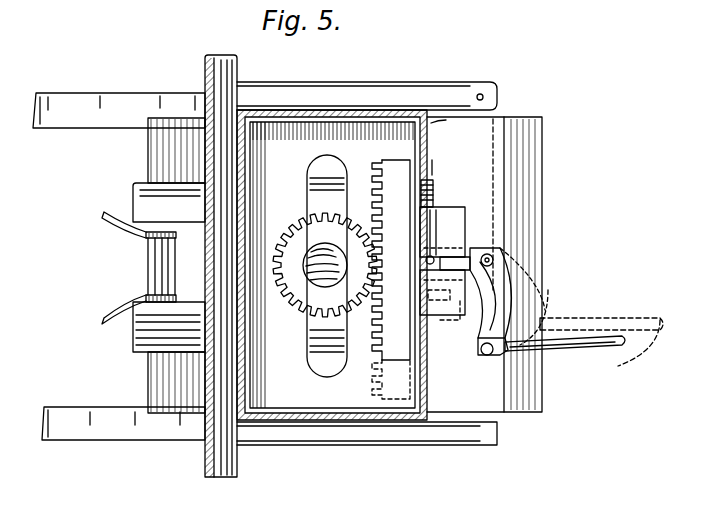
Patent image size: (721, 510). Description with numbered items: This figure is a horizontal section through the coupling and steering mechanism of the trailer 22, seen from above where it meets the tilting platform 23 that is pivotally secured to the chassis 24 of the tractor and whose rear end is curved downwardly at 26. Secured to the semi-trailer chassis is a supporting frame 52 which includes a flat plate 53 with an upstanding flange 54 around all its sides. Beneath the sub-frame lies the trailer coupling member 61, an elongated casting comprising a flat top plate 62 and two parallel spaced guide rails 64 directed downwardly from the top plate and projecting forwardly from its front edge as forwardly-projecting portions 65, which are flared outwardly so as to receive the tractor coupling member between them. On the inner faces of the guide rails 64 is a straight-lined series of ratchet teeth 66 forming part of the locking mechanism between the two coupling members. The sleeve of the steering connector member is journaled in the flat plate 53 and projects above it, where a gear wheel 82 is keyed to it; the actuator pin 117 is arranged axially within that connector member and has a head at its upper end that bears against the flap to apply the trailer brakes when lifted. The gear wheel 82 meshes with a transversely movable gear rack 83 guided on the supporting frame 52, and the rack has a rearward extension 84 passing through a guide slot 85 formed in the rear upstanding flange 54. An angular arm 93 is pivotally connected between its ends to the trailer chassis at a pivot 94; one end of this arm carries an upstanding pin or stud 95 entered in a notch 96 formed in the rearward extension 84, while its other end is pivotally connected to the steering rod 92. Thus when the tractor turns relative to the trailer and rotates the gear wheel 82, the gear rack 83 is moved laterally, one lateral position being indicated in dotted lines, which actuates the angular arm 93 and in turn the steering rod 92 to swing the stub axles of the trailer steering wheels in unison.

The trailer 22 is at (135, 266).
The tilting platform 23 is at (493, 195).
The chassis 24 is at (125, 430).
The downwardly curved rear end 26 is at (535, 238).
The supporting frame 52 is at (376, 421).
The flat plate 53 is at (307, 266).
The upstanding flange 54 is at (418, 142).
The trailer coupling member 61 is at (188, 188).
The flat top plate 62 is at (169, 357).
The guide rails 64 is at (140, 233).
The forwardly-projecting portions 65 is at (102, 222).
The ratchet teeth 66 is at (196, 216).
The gear wheel 82 is at (325, 265).
The gear rack 83 is at (391, 279).
The rearward extension 84 is at (442, 232).
The guide slot 85 is at (434, 188).
The steering rod 92 is at (612, 346).
The angular arm 93 is at (500, 300).
The pivot 94 is at (489, 254).
The upstanding pin or stud 95 is at (426, 266).
The notch 96 is at (460, 252).
The actuator pin 117 is at (333, 256).